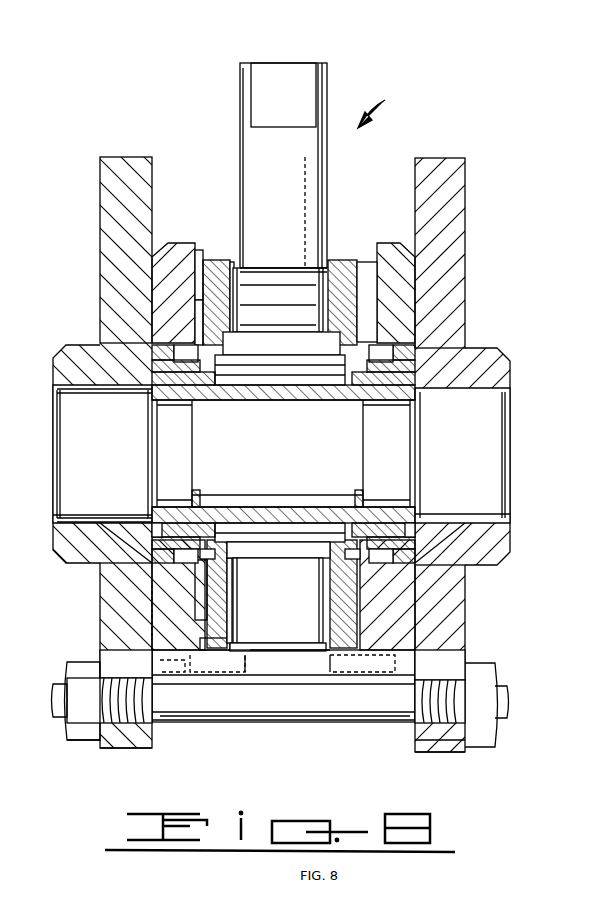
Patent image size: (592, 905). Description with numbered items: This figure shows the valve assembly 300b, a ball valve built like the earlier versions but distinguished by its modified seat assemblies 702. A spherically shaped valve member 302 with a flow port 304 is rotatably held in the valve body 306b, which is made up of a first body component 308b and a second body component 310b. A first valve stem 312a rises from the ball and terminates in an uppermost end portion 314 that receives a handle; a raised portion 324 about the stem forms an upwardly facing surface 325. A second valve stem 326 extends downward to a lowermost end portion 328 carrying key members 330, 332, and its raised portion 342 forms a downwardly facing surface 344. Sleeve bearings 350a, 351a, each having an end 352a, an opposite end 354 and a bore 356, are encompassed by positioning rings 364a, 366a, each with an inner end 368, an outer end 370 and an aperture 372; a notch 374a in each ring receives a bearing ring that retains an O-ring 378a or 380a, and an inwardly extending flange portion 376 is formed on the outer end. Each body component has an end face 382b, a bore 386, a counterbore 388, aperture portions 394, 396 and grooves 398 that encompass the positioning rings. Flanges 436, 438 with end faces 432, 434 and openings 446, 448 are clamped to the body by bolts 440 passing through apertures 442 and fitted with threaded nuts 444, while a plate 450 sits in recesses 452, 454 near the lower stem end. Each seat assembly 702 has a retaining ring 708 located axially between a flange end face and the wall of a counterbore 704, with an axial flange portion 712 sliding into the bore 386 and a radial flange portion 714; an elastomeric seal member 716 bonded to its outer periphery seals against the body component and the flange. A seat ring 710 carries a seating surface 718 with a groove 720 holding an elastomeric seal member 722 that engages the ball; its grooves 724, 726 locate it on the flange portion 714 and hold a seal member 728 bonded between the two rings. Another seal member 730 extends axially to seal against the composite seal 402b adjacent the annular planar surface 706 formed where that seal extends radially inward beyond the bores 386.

The valve assembly 300b is at (389, 110).
The valve member 302 is at (308, 400).
The flow port 304 is at (272, 400).
The upper body half 306b is at (158, 235).
The first body component 308b is at (152, 585).
The second body component 310b is at (448, 610).
The first valve stem 312a is at (305, 168).
The uppermost end portion 314 is at (306, 72).
The raised portion 324 is at (235, 268).
The upwardly facing surface 325 is at (296, 270).
The second valve stem 326 is at (320, 660).
The lowermost end portion 328 is at (275, 720).
The key member 330 is at (225, 675).
The key member 332 is at (345, 684).
The raised portion 342 is at (285, 639).
The downwardly facing surface 344 is at (300, 720).
The sleeve bearing 350a is at (345, 262).
The sleeve bearing 351a is at (358, 630).
The end 352a is at (240, 330).
The end 354 is at (218, 260).
The bore 356 is at (240, 290).
The positioning ring 364a is at (200, 255).
The positioning ring 366a is at (185, 650).
The inner end 368 is at (152, 381).
The outer end 370 is at (232, 262).
The aperture 372 is at (240, 310).
The notch 374a is at (357, 297).
The flange portion 376 is at (338, 258).
The O-ring 378a is at (230, 346).
The O-ring 380a is at (232, 568).
The end face 382b is at (152, 605).
The bore 386 is at (152, 552).
The counterbore 388 is at (152, 376).
The aperture portion 394 is at (203, 280).
The aperture portion 396 is at (200, 644).
The groove 398 is at (203, 300).
The composite seal 402b is at (280, 507).
The end face 432 is at (155, 750).
The end face 434 is at (412, 748).
The flange 436 is at (102, 745).
The flange 438 is at (418, 760).
The bolt 440 is at (305, 722).
The aperture 442 is at (80, 685).
The threaded nut 444 is at (72, 738).
The opening 446 is at (75, 392).
The opening 448 is at (486, 398).
The plate 450 is at (190, 675).
The recess 452 is at (100, 655).
The recess 454 is at (440, 654).
The seat assembly 702 is at (180, 495).
The counterbore 704 is at (170, 560).
The annular planar surface 706 is at (205, 560).
The retaining ring 708 is at (152, 362).
The seat ring 710 is at (152, 410).
The flange portion 712 is at (184, 345).
The flange portion 714 is at (415, 378).
The elastomeric seal member 716 is at (150, 338).
The seating surface 718 is at (265, 495).
The groove 720 is at (180, 470).
The elastomeric seal member 722 is at (200, 405).
The groove 724 is at (152, 505).
The annular groove 726 is at (152, 512).
The seal member 728 is at (145, 527).
The seal member 730 is at (198, 500).